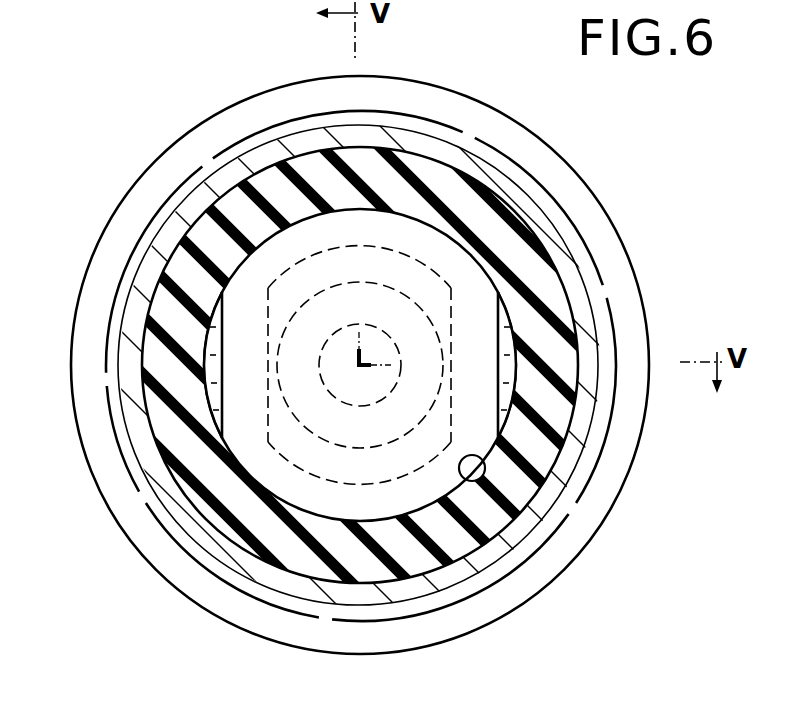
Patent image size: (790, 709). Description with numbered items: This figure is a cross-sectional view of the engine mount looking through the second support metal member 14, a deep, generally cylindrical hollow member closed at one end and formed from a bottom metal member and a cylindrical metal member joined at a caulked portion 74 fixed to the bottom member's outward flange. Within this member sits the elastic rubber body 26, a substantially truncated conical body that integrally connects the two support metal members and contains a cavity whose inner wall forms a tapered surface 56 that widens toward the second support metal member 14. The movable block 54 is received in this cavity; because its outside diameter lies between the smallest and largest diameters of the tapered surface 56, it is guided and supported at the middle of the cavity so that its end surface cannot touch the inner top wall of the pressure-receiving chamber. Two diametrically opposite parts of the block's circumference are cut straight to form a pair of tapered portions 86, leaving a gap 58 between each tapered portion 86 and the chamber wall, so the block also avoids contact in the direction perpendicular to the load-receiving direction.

The second support metal member 14 is at (335, 365).
The elastic rubber body 26 is at (463, 203).
The movable block 54 is at (402, 198).
The tapered surface 56 is at (461, 481).
The gap 58 is at (217, 366).
The caulked portion 74 is at (143, 452).
The tapered portions 86 is at (208, 342).